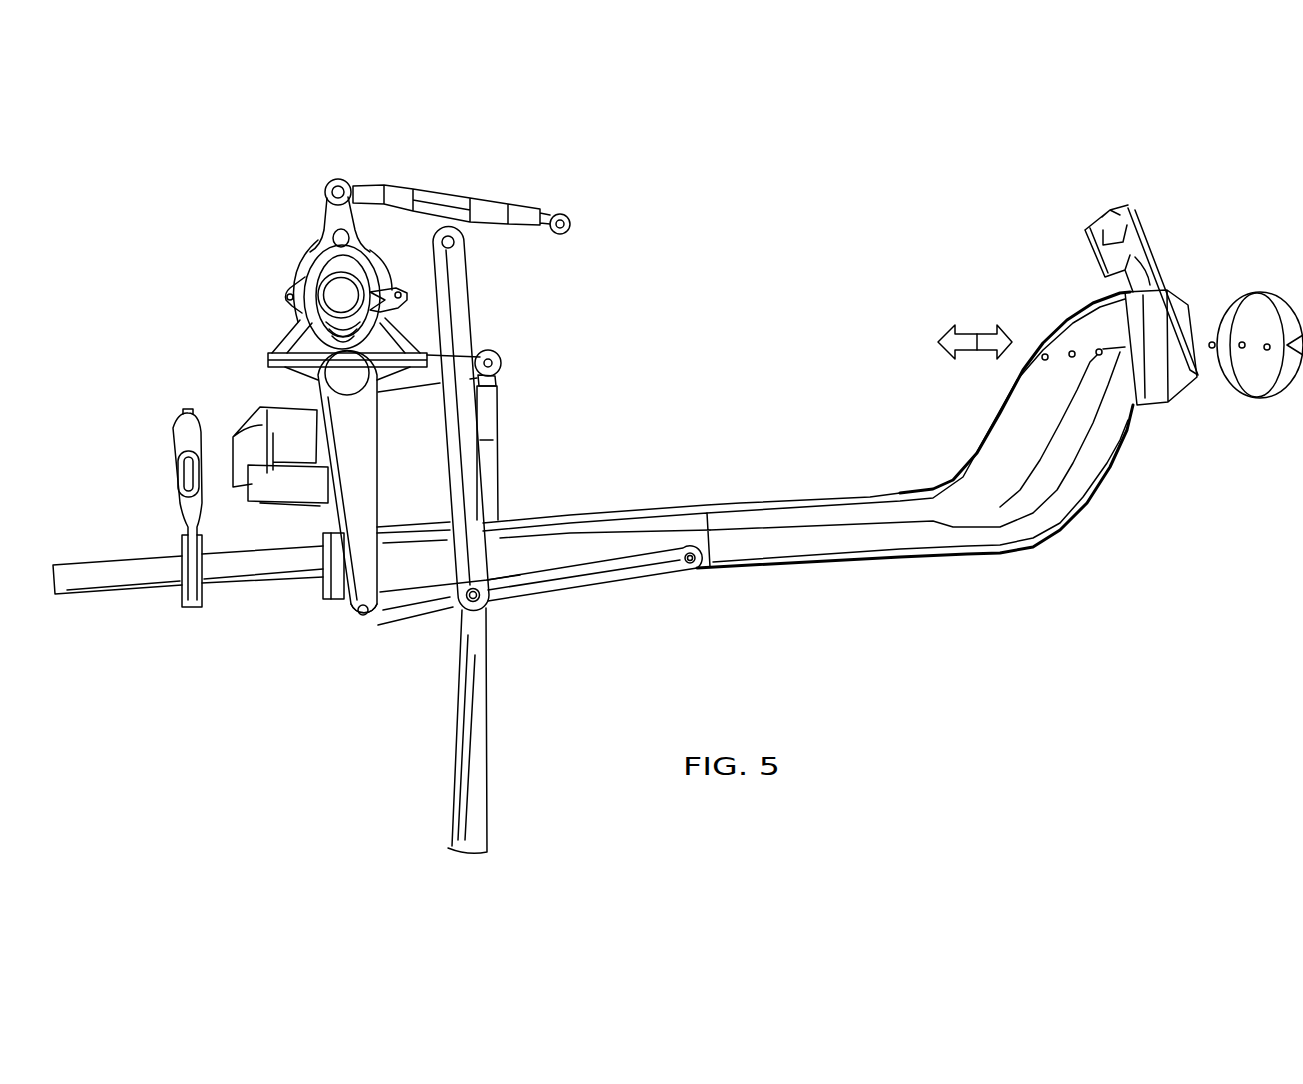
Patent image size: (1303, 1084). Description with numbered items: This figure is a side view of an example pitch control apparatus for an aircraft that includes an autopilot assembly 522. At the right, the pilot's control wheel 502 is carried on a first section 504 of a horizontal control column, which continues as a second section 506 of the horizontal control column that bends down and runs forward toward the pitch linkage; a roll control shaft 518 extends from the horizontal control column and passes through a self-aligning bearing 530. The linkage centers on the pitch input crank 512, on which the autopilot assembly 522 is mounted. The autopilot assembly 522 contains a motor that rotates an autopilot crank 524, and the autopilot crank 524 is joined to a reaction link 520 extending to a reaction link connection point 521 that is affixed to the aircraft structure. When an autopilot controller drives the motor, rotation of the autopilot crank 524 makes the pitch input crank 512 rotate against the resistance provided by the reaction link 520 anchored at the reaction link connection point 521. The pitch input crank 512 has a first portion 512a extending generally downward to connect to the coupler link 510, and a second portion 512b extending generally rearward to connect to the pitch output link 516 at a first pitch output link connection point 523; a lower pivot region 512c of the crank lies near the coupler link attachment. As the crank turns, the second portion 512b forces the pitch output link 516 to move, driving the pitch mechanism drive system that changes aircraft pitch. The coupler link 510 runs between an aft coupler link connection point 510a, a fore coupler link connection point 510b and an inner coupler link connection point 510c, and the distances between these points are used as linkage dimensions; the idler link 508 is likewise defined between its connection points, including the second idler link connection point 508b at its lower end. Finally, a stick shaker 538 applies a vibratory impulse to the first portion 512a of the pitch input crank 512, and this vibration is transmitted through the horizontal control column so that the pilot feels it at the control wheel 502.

The control wheel 502 is at (1148, 263).
The first section of horizontal control column 504 is at (1133, 437).
The second section of horizontal control column 506 is at (940, 547).
The idler link 508 is at (463, 427).
The second idler link connection point 508b is at (467, 617).
The coupler link 510 is at (590, 575).
The aft coupler link connection point 510a is at (712, 562).
The fore coupler link connection point 510b is at (363, 625).
The inner coupler link connection point 510c is at (492, 602).
The pitch input crank 512 is at (420, 463).
The first portion of pitch input crank 512a is at (352, 545).
The second portion of pitch input crank 512b is at (426, 372).
The frame lower pivot 512c is at (363, 623).
The pitch output link 516 is at (478, 720).
The roll control shaft 518 is at (92, 573).
The reaction link 520 is at (470, 207).
The reaction link connection point 521 is at (560, 211).
The autopilot assembly 522 is at (285, 255).
The first pitch output link connection point 523 is at (490, 352).
The autopilot crank 524 is at (327, 210).
The self-aligning bearing 530 is at (160, 498).
The stick shaker 538 is at (250, 436).